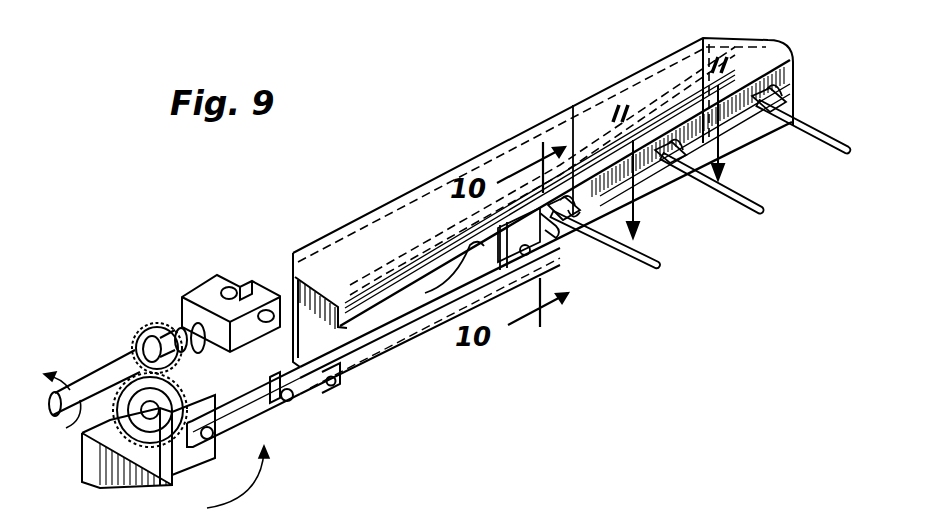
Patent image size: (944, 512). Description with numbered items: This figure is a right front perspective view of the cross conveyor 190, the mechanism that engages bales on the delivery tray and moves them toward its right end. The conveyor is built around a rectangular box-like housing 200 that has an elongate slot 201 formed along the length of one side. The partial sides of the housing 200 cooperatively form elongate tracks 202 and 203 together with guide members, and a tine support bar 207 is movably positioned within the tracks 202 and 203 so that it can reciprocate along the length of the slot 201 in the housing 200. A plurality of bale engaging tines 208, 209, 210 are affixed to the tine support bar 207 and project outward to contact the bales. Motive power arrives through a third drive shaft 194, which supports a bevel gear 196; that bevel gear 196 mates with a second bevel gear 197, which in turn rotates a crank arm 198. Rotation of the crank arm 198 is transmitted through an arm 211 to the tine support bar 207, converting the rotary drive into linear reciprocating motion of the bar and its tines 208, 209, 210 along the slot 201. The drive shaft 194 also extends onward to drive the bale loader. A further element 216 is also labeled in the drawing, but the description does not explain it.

The drive assembly 190 is at (458, 130).
The drive shaft 194 is at (96, 372).
The bevel gear 196 is at (143, 333).
The bearing bracket 197 is at (82, 442).
The connecting rod 198 is at (253, 417).
The channel housing 200 is at (392, 201).
The carriage 201 is at (403, 297).
The clevis block 202 is at (290, 300).
The pivot block 203 is at (322, 382).
The latch 207 is at (540, 213).
The pin 208 is at (653, 258).
The pin 209 is at (733, 177).
The pin 210 is at (832, 138).
The slide bar 211 is at (400, 330).
The guide pin 216 is at (573, 110).